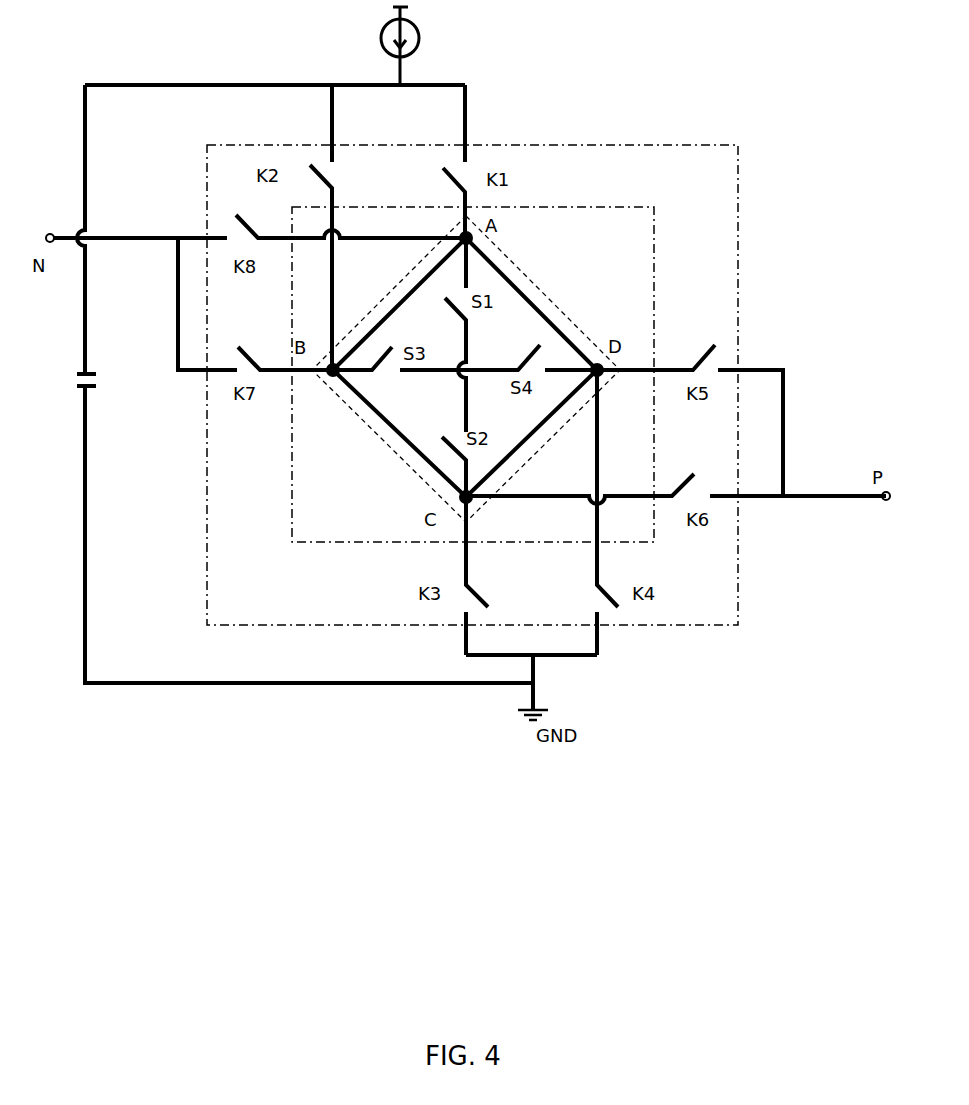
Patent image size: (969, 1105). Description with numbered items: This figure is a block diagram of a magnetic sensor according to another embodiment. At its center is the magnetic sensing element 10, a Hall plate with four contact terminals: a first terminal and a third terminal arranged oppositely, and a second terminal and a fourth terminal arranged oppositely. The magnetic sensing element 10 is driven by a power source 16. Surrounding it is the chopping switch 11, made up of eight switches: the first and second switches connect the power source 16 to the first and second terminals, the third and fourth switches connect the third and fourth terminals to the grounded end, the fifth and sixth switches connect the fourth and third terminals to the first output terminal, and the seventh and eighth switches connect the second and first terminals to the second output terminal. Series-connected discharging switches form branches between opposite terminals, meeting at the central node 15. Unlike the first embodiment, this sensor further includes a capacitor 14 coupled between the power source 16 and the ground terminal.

The magnetic sensing element 10 is at (530, 282).
The chopping switch 11 is at (713, 144).
The capacitor 14 is at (483, 342).
The bridge center node 15 is at (452, 378).
The power source 16 is at (416, 46).